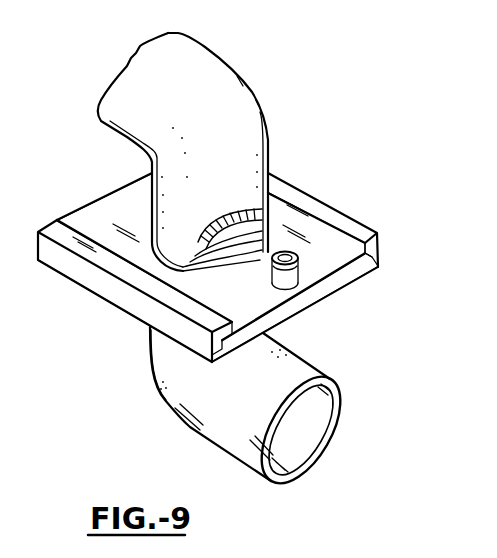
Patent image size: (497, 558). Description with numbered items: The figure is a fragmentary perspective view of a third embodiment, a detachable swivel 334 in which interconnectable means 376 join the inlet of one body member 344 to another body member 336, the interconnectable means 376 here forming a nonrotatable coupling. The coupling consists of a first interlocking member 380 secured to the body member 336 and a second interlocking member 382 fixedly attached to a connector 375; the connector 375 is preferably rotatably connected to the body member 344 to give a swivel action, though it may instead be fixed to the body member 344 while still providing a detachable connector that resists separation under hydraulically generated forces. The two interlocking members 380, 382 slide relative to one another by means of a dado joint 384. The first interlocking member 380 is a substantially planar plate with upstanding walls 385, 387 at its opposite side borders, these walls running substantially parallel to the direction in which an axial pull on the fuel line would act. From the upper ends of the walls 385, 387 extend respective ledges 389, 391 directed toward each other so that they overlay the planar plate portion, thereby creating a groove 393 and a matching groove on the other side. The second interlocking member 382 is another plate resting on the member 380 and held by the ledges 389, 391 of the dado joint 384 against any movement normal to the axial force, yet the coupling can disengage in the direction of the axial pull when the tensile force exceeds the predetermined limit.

The detachable swivel 334 is at (282, 164).
The body member 336 is at (163, 417).
The body member 344 is at (258, 20).
The connector 375 is at (150, 292).
The interconnectable means 376 is at (69, 211).
The first interlocking member 380 is at (284, 318).
The second interlocking member 382 is at (110, 222).
The dado joint 384 is at (366, 265).
The upstanding wall 385 is at (60, 263).
The upstanding wall 387 is at (357, 227).
The ledge 389 is at (238, 308).
The ledge 391 is at (335, 222).
The groove 393 is at (213, 356).